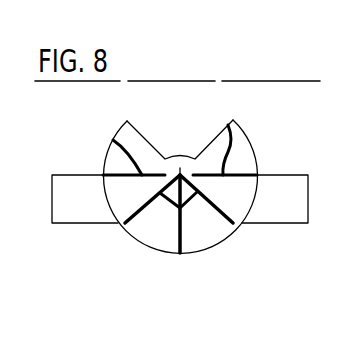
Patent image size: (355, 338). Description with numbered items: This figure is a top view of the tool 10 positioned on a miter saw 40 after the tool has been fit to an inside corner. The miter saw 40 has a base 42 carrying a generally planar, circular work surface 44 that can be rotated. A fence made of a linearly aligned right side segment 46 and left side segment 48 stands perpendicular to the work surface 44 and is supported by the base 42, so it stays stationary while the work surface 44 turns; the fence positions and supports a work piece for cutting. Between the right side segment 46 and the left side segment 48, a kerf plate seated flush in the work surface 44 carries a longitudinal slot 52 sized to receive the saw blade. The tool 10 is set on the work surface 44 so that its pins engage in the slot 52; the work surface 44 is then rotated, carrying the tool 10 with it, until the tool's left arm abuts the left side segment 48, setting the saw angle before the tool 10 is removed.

The tool 10 is at (186, 224).
The miter saw 40 is at (258, 167).
The base 42 is at (70, 224).
The work surface 44 is at (219, 230).
The right side segment 46 is at (220, 127).
The left side segment 48 is at (113, 140).
The longitudinal slot 52 is at (181, 237).